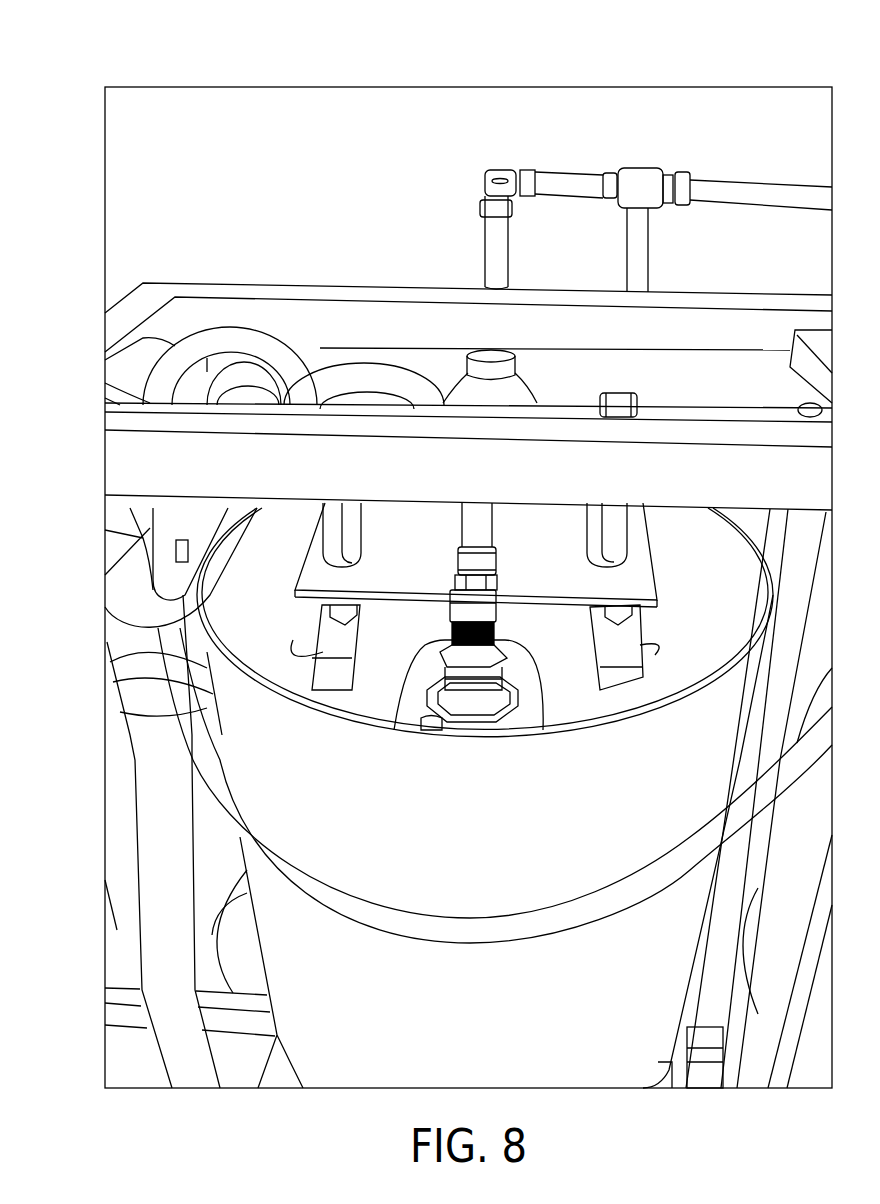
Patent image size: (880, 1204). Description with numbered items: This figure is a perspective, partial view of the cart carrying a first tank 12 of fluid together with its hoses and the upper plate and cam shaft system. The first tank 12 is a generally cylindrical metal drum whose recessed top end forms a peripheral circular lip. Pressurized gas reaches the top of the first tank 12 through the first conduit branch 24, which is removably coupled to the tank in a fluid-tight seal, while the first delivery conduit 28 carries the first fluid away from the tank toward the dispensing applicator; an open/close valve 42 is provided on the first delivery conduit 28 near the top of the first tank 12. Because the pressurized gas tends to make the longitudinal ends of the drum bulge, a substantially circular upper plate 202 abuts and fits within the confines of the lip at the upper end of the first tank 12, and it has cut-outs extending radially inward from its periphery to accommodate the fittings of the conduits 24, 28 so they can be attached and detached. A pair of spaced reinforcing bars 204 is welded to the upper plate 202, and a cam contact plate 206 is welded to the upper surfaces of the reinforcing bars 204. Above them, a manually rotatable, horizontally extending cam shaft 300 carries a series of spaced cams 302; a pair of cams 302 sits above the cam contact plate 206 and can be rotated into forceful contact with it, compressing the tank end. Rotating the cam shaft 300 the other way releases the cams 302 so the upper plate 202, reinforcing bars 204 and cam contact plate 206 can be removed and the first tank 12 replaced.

The first tank 12 is at (488, 817).
The first conduit branch 24 is at (117, 601).
The first delivery conduit 28 is at (483, 235).
The open/close valve 42 is at (645, 185).
The upper plate 202 is at (573, 665).
The reinforcing bars 204 is at (315, 690).
The cam contact plate 206 is at (427, 572).
The cam shaft 300 is at (672, 404).
The cams 302 is at (320, 536).